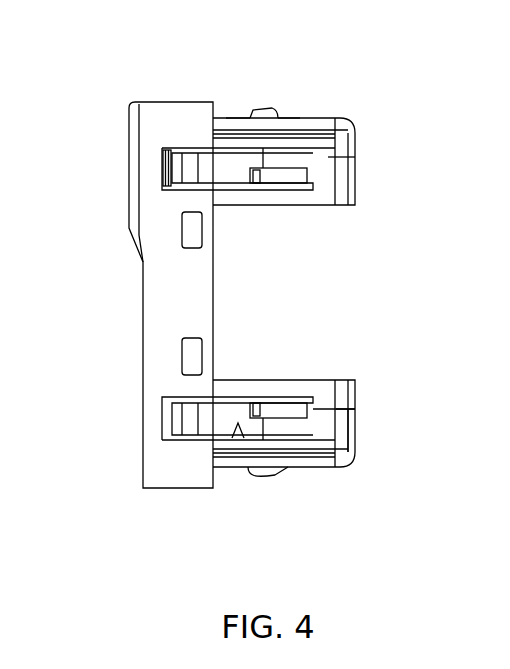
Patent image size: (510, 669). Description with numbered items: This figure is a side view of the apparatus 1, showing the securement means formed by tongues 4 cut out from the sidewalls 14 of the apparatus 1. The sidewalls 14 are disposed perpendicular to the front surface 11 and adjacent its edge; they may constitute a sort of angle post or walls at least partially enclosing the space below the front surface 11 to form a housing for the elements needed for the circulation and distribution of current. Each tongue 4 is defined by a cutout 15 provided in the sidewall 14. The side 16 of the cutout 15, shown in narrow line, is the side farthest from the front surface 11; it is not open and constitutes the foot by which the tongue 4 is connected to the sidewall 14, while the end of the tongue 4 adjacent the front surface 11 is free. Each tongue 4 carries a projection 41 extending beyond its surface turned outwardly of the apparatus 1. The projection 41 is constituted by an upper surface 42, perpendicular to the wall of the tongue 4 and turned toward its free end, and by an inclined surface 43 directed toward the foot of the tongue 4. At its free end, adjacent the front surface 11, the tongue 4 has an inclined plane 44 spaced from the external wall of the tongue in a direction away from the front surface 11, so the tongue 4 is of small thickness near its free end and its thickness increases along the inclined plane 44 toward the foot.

The apparatus 1 is at (131, 343).
The front surface 11 is at (143, 295).
The tongue 4 is at (213, 168).
The sidewall 14 is at (355, 157).
The cutout 15 is at (245, 438).
The side of cutout 16 is at (355, 415).
The projection 41 is at (267, 98).
The upper surface 42 is at (247, 115).
The inclined surface 43 is at (280, 116).
The inclined plane 44 is at (163, 172).